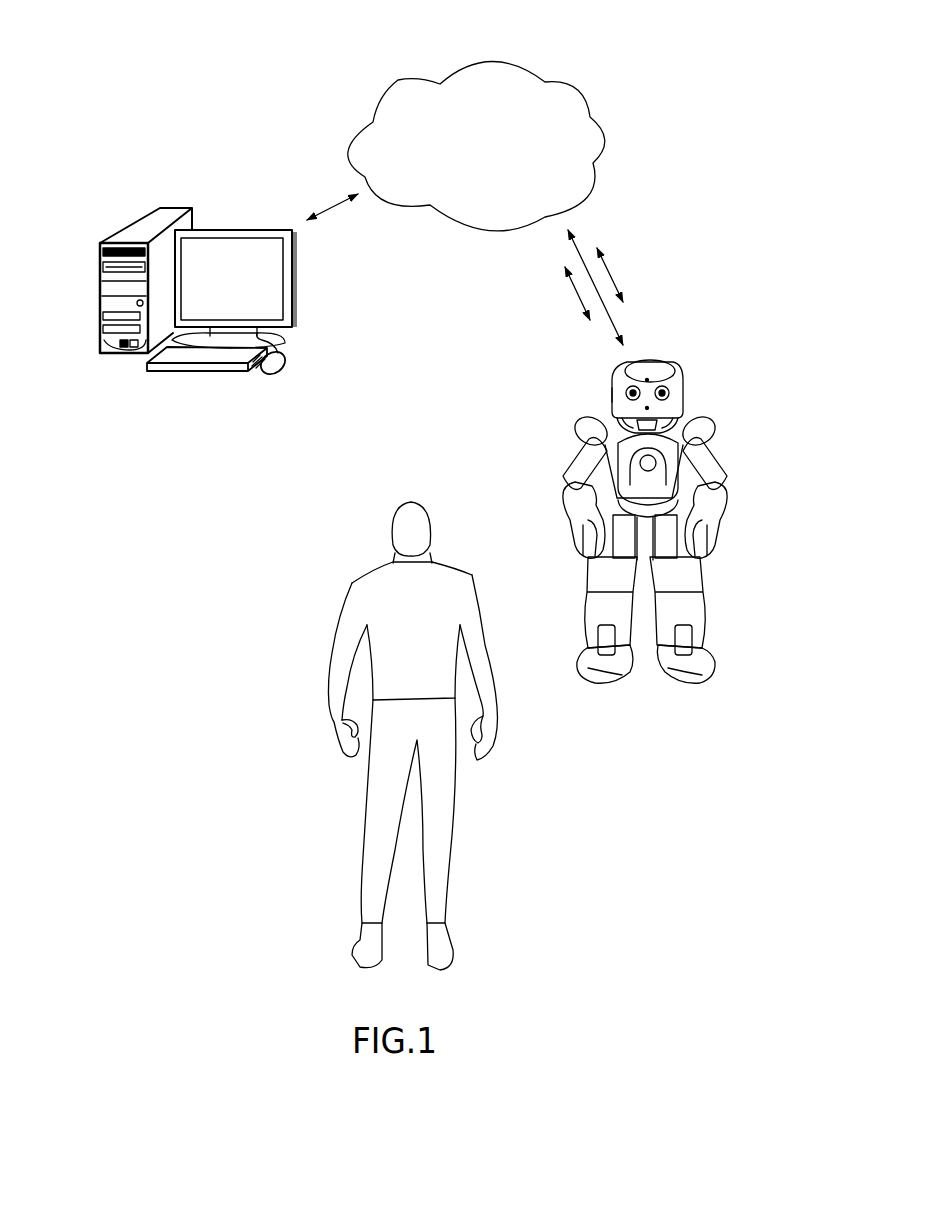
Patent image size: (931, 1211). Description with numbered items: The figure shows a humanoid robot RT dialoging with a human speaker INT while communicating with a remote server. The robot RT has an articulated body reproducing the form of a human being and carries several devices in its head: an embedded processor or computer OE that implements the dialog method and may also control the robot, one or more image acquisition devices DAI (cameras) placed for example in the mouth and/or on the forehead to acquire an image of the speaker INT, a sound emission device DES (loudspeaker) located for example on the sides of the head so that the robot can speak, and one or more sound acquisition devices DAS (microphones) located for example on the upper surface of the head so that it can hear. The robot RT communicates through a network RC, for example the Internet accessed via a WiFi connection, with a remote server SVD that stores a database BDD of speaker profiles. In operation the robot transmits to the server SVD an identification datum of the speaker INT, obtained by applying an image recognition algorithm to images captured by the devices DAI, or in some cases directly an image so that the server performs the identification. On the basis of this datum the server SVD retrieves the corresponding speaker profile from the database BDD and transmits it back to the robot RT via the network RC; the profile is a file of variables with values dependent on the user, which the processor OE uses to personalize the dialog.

The network RC is at (398, 80).
The database BDD is at (160, 205).
The remote server SVD is at (208, 372).
The humanoid robot RT is at (722, 462).
The sound acquisition device DAS is at (690, 338).
The embedded processor OE is at (624, 363).
The image acquisition device DAI is at (647, 408).
The sound emission device DES is at (612, 395).
The human speaker INT is at (340, 610).